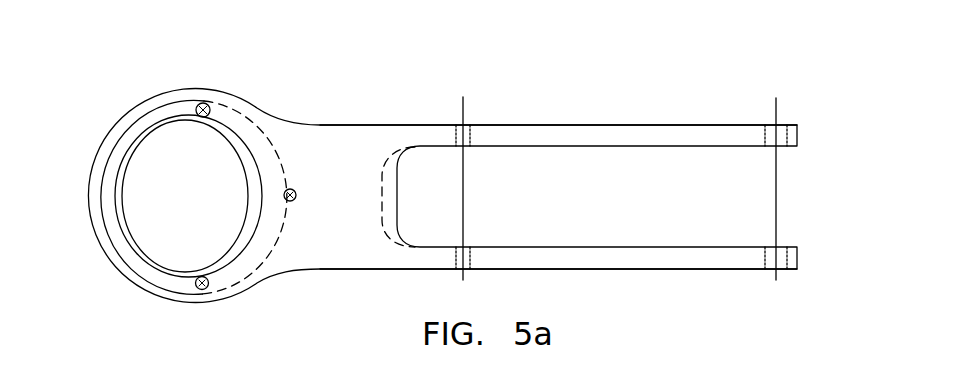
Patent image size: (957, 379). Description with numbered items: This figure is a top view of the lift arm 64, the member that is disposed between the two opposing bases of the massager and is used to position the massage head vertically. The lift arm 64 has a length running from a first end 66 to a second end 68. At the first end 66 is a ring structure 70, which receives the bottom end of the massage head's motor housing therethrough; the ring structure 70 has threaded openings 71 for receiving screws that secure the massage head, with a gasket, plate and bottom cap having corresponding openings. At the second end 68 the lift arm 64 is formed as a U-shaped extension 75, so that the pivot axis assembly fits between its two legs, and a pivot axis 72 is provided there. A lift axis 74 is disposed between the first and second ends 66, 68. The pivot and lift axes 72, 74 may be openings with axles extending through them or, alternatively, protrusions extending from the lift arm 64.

The lift arm 64 is at (349, 88).
The first end 66 is at (128, 118).
The second end 68 is at (690, 147).
The ring structure 70 is at (113, 193).
The threaded openings 71 is at (204, 117).
The pivot axis 72 is at (777, 217).
The lift axis 74 is at (466, 210).
The U-shaped extension 75 is at (558, 172).